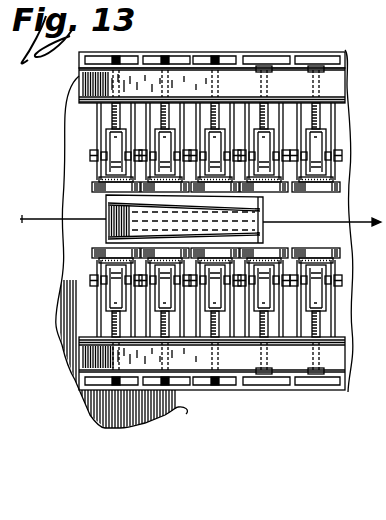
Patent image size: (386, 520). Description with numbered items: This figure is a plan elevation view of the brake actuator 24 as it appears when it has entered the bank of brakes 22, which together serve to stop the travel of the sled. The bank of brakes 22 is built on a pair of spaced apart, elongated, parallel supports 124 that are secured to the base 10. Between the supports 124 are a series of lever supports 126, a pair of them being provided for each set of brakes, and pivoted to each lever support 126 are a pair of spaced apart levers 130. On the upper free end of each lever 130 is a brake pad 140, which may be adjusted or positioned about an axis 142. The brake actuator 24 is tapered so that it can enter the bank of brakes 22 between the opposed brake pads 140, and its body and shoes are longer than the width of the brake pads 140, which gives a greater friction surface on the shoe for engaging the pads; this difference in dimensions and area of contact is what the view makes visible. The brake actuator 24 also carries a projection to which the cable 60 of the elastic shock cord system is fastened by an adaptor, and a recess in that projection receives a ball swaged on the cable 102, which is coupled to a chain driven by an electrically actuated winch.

The base 10 is at (181, 406).
The bank of brakes 22 is at (262, 53).
The brake actuator 24 is at (265, 212).
The cable 60 is at (364, 222).
The cable 102 is at (42, 219).
The supports 124 is at (325, 85).
The lever supports 126 is at (178, 104).
The levers 130 is at (318, 146).
The brake pad 140 is at (333, 186).
The axis 142 is at (331, 284).